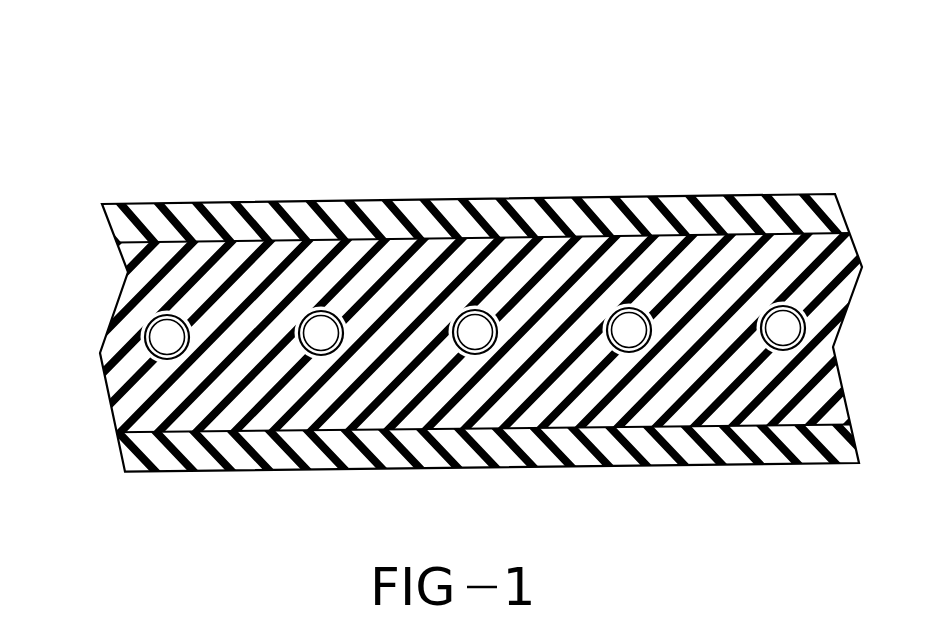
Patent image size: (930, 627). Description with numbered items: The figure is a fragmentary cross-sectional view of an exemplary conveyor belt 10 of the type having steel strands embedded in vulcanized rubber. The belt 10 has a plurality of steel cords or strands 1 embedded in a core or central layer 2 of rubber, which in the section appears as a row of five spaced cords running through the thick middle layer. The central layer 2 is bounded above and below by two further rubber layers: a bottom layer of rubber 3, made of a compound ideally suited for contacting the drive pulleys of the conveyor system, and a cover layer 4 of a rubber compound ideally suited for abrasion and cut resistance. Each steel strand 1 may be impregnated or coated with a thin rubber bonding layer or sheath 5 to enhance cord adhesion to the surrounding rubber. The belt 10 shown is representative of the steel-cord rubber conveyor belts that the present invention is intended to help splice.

The conveyor belt 10 is at (72, 168).
The steel cords or strands 1 is at (178, 314).
The central layer 2 is at (465, 289).
The bottom layer of rubber 3 is at (625, 465).
The cover layer 4 is at (558, 197).
The rubber bonding layer or sheath 5 is at (640, 309).